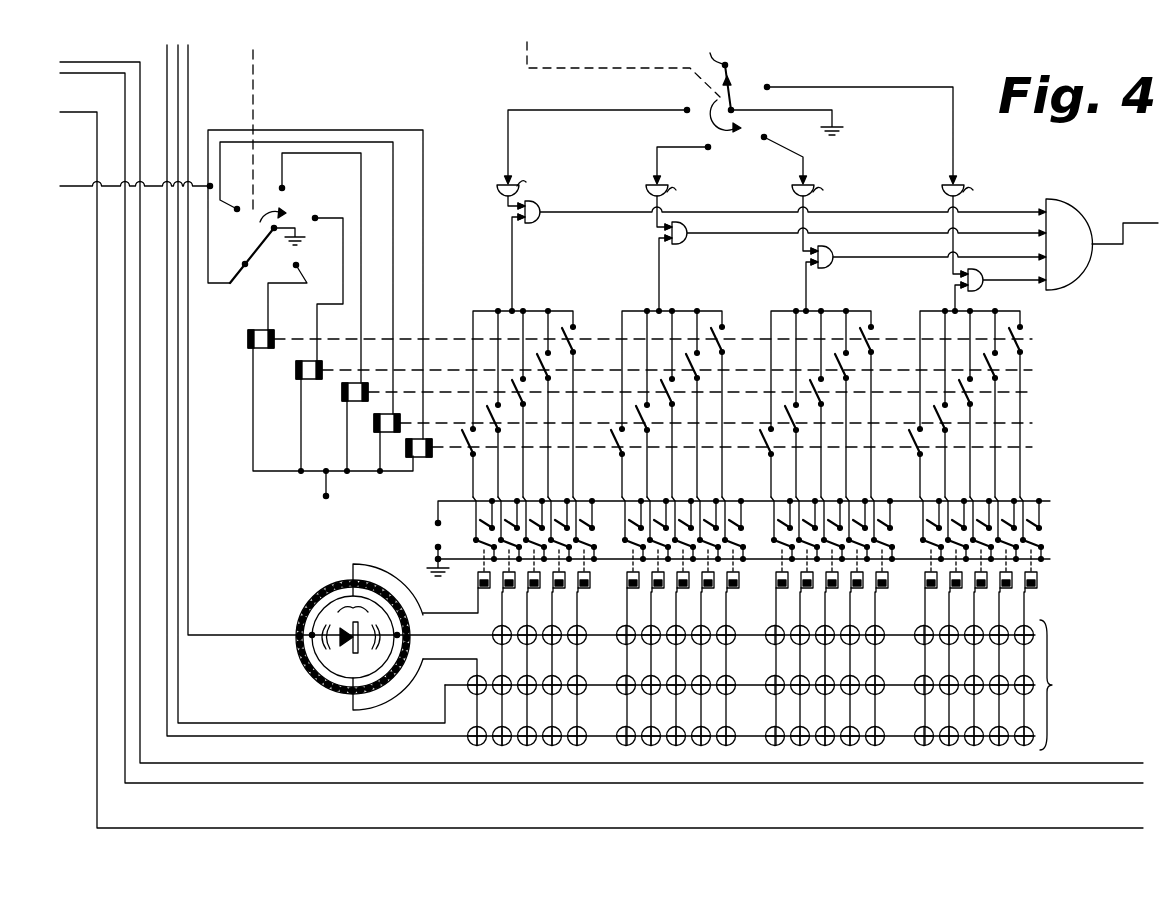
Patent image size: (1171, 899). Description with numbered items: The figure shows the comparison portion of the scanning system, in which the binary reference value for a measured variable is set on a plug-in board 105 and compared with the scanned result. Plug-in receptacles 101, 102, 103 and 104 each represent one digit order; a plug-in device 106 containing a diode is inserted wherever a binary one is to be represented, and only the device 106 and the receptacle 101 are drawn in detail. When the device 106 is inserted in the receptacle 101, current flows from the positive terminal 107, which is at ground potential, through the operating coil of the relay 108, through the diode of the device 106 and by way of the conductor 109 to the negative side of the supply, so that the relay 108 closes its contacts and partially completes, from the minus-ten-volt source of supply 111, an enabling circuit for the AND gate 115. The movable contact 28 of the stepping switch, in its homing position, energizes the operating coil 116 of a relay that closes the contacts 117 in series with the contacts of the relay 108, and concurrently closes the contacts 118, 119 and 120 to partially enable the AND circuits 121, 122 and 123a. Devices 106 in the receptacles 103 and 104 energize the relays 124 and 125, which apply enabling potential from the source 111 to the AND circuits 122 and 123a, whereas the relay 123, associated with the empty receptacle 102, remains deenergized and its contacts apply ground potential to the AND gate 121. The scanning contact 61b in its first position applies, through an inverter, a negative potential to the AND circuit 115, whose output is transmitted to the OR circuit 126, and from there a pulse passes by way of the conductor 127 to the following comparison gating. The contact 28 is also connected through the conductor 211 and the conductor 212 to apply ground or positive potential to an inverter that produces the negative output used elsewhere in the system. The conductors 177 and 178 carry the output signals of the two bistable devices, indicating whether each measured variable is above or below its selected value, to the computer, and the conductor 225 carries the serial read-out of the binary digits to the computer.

The conductor 178 is at (84, 62).
The conductor 177 is at (70, 74).
The conductor 225 is at (70, 112).
The conductor 212 is at (68, 188).
The conductor 109 is at (190, 65).
The conductor 211 is at (210, 238).
The movable contact 28 is at (258, 246).
The operating coil of relay 116 is at (418, 458).
The scanning contact 61b is at (738, 66).
The AND gate 115 is at (540, 207).
The AND circuit 121 is at (687, 236).
The AND circuit 122 is at (833, 268).
The AND circuit 123a is at (983, 290).
The OR circuit 126 is at (1056, 205).
The conductor 127 is at (1148, 222).
The contacts 117 is at (464, 428).
The contacts 118 is at (617, 452).
The contacts 119 is at (766, 452).
The contacts 120 is at (915, 452).
The source of supply 111 is at (438, 508).
The positive terminal 107 is at (441, 551).
The relay 108 is at (478, 587).
The relay 123 is at (630, 580).
The relay 124 is at (779, 580).
The relay 125 is at (928, 580).
The plug-in board 105 is at (1053, 684).
The plug-in receptacle 102 is at (628, 630).
The plug-in receptacle 103 is at (777, 630).
The plug-in receptacle 104 is at (926, 630).
The plug-in receptacle 101 is at (312, 597).
The plug-in device 106 is at (362, 604).